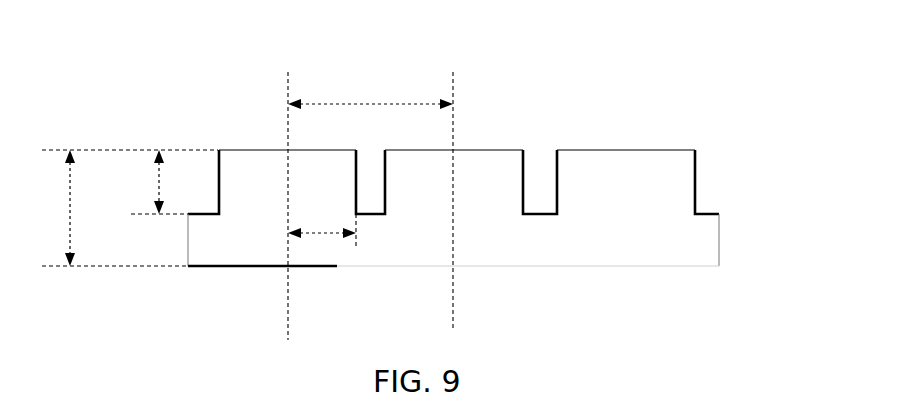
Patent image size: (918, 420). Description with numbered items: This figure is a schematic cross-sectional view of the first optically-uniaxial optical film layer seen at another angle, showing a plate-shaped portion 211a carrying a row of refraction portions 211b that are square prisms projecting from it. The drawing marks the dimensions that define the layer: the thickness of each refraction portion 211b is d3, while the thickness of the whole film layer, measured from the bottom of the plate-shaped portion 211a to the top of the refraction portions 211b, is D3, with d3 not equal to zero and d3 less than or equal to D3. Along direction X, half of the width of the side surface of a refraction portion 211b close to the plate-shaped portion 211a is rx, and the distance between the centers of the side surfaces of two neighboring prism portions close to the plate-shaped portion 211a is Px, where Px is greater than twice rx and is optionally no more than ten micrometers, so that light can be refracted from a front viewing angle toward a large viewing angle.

The refraction portions 211b is at (665, 180).
The plate-shaped portion 211a is at (665, 240).
The thickness of the first optically-uniaxial optical film layer D3 is at (114, 208).
The thickness of the refraction portion d3 is at (151, 182).
The distance between centers of neighboring prism portions in direction X Px is at (370, 201).
The half width of the refraction portion side surface in direction X rx is at (322, 223).